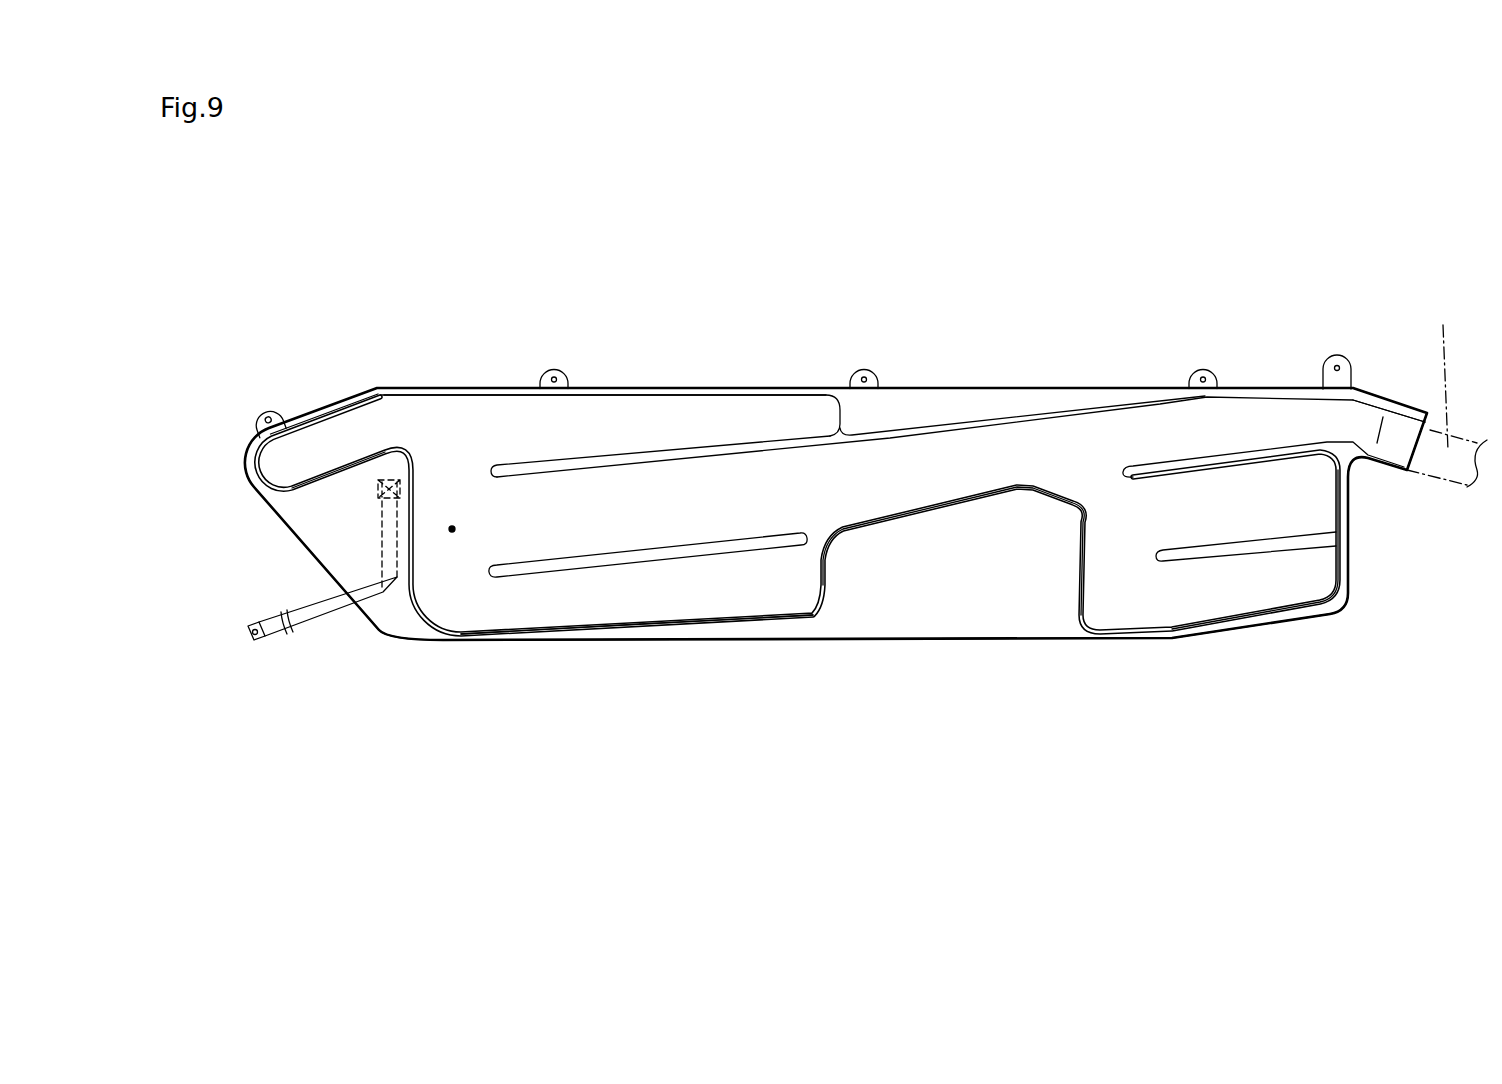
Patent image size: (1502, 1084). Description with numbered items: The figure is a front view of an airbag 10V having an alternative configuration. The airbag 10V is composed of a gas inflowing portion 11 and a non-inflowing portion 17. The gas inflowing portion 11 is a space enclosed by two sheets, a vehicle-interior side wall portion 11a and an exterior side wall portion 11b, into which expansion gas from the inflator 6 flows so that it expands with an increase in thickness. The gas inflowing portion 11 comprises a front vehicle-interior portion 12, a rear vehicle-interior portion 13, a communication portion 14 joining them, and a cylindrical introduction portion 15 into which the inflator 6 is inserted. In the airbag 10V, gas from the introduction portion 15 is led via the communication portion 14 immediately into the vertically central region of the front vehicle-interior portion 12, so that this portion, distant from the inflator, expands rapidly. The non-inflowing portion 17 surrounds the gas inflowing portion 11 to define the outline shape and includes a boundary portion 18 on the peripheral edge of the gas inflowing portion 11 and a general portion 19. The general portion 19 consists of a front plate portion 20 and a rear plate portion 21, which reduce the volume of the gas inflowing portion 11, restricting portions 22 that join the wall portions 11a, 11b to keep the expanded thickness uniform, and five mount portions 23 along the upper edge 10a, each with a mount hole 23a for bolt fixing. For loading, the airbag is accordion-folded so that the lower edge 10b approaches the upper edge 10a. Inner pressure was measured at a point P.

The airbag 10V is at (453, 283).
The upper edge 10a is at (737, 393).
The lower edge 10b is at (840, 640).
The gas inflowing portion 11 is at (754, 765).
The vehicle-interior side wall portion 11a is at (613, 593).
The exterior side wall portion 11b is at (685, 587).
The front vehicle-interior portion 12 is at (627, 503).
The rear vehicle-interior portion 13 is at (1233, 593).
The communication portion 14 is at (973, 455).
The introduction portion 15 is at (1395, 425).
The inflator 6 is at (1447, 390).
The non-inflowing portion 17 is at (836, 514).
The general portion 19 is at (797, 515).
The boundary portion 18 is at (521, 632).
The front plate portion 20 is at (317, 525).
The rear plate portion 21 is at (973, 600).
The restricting portion 22 is at (707, 543).
The mount portion 23 is at (286, 403).
The mount hole 23a is at (266, 405).
The point P is at (452, 530).